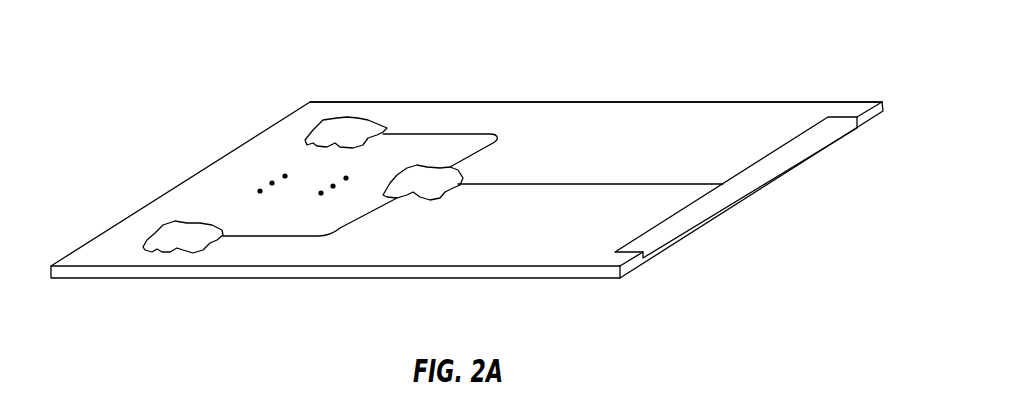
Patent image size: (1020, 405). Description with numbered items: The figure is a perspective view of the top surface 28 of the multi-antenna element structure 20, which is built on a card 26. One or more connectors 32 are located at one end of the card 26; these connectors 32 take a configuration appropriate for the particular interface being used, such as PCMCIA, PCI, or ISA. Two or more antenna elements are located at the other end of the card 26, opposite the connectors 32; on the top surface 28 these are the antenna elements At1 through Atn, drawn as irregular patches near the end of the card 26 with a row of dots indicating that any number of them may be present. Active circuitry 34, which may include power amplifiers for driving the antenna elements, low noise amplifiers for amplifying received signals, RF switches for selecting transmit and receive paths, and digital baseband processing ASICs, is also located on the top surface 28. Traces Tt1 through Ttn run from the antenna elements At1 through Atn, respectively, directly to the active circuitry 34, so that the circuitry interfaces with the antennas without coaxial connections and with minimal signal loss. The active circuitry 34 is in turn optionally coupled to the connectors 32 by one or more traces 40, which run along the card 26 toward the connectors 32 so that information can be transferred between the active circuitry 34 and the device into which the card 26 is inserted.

The multi-antenna element structure 20 is at (467, 171).
The card 26 is at (473, 99).
The top surface 28 is at (653, 110).
The connectors 32 is at (755, 172).
The active circuitry 34 is at (437, 183).
The traces 40 is at (575, 183).
The antenna element At1 is at (353, 127).
The trace Tt1 is at (427, 130).
The antenna element Atn is at (187, 245).
The trace Ttn is at (275, 237).